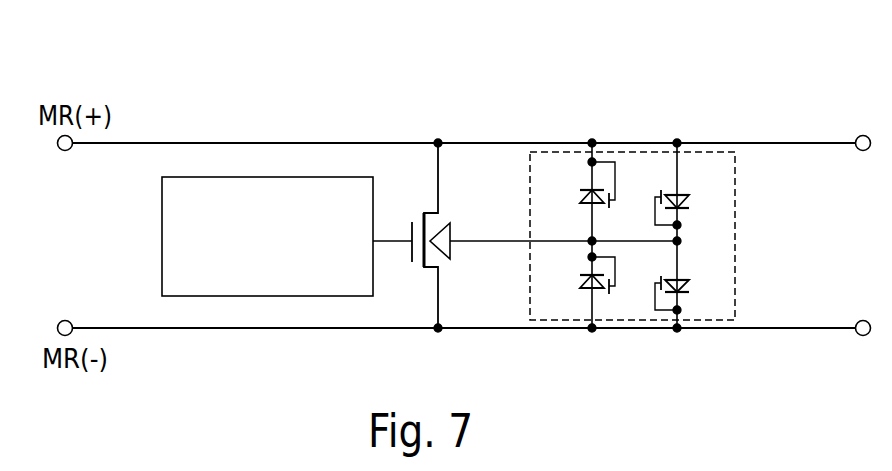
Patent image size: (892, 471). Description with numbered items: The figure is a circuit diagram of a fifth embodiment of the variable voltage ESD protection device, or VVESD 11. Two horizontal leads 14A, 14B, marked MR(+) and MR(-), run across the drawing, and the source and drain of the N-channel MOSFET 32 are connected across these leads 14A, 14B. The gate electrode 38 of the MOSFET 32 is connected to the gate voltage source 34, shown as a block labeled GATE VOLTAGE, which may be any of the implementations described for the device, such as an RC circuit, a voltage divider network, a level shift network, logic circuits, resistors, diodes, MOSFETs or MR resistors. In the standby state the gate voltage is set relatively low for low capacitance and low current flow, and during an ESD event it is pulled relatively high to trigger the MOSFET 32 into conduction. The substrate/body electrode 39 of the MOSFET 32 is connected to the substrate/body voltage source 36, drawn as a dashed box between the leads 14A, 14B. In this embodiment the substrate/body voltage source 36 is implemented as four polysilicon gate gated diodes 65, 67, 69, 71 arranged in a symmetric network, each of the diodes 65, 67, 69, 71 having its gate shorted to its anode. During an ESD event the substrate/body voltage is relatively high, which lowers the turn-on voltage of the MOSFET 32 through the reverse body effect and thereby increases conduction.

The VVESD 11 is at (393, 98).
The lead 14A is at (787, 140).
The lead 14B is at (797, 332).
The N-channel MOSFET 32 is at (445, 190).
The gate voltage source 34 is at (283, 185).
The substrate/body voltage source 36 is at (640, 157).
The gate electrode 38 is at (395, 248).
The substrate/body electrode 39 is at (478, 244).
The polysilicon gate gated diode 65 is at (572, 194).
The polysilicon gate gated diode 67 is at (695, 200).
The polysilicon gate gated diode 69 is at (573, 292).
The polysilicon gate gated diode 71 is at (695, 292).